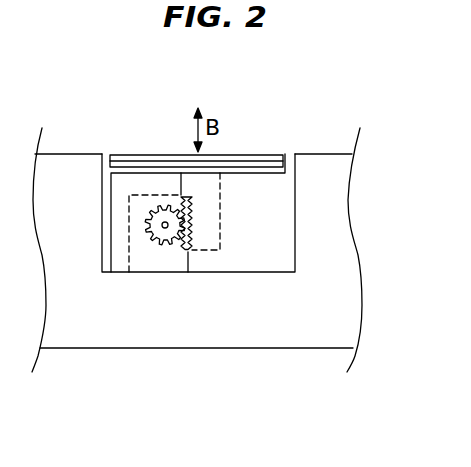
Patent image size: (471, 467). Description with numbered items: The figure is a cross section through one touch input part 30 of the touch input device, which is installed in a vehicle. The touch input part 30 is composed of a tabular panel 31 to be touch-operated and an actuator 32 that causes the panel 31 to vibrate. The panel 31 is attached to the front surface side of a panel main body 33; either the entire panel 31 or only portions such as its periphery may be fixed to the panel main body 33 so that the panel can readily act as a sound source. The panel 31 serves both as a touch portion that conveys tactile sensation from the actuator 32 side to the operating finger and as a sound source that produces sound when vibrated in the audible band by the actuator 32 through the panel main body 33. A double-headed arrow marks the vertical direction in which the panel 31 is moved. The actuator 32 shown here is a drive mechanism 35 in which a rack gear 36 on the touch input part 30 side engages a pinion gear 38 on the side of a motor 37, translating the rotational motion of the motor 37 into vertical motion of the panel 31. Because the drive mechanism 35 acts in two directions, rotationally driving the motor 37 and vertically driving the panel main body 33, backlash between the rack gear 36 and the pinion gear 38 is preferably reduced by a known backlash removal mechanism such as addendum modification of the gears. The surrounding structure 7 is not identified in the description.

The main body / housing 7 is at (343, 238).
The touch input part 30 is at (155, 107).
The tabular panel 31 is at (162, 155).
The actuator 32 is at (111, 177).
The panel main body 33 is at (257, 165).
The drive mechanism 35 is at (263, 411).
The rack gear 36 is at (188, 238).
The motor 37 is at (146, 263).
The pinion gear 38 is at (170, 240).